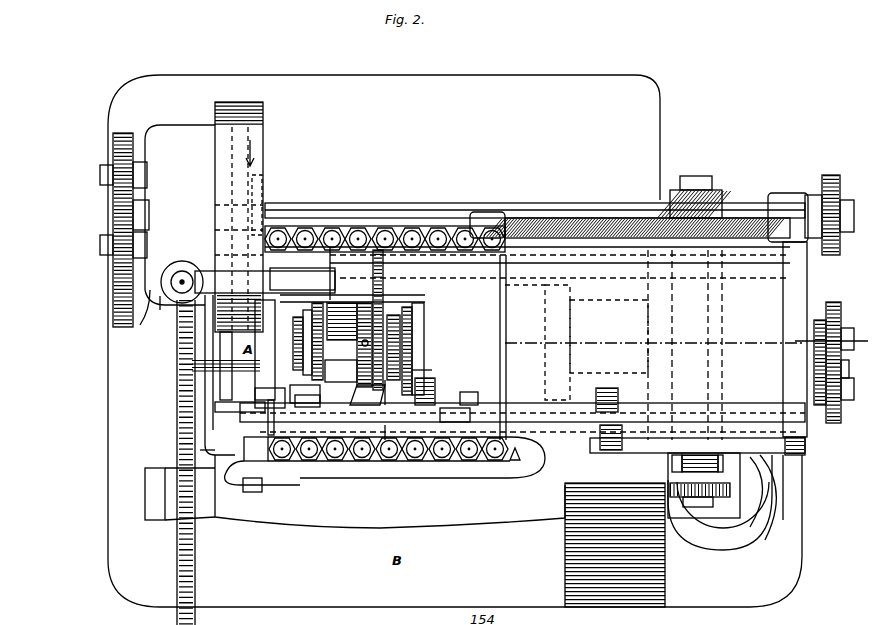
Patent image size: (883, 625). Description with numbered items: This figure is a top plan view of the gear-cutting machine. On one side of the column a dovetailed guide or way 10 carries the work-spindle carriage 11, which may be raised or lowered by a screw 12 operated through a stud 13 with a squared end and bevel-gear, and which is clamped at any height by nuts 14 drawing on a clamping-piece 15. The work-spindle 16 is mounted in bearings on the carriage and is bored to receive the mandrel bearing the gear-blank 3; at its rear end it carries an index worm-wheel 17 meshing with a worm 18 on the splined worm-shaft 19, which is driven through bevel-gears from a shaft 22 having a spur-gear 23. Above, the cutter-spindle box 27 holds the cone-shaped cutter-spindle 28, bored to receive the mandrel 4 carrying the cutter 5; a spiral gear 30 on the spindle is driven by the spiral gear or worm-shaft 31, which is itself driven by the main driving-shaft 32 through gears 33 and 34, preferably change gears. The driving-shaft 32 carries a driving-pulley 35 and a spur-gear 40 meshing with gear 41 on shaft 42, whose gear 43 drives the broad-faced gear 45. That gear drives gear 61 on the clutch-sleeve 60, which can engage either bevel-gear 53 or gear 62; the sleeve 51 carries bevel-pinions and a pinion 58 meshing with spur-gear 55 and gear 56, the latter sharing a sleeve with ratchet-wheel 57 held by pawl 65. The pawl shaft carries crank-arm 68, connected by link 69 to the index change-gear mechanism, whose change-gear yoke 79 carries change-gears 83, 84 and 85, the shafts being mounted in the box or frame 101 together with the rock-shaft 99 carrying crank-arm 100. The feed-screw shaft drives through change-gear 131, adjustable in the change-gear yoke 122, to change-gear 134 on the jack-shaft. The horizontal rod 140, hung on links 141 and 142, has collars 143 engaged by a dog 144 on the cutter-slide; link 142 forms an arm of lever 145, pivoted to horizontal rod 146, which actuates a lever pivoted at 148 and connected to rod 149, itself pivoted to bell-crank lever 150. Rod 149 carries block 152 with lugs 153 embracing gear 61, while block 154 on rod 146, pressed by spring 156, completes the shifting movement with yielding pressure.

The box or frame 101 is at (180, 207).
The change-gear 85 is at (115, 158).
The change-gear 83 is at (113, 245).
The change-gear 84 is at (118, 305).
The change-gear yoke 79 is at (140, 317).
The driving-pulley 35 is at (263, 110).
The spur-gear 40 is at (262, 178).
The worm 18 is at (178, 262).
The gear 41 is at (268, 275).
The worm-shaft 19 is at (175, 304).
The index worm-wheel 17 is at (177, 392).
The gear 43 is at (360, 222).
The shaft 42 is at (322, 232).
The main driving-shaft 32 is at (490, 212).
The spiral gear or worm-shaft 31 is at (585, 218).
The spiral gear 30 is at (718, 192).
The cutter-spindle 28 is at (705, 350).
The gear 33 is at (838, 180).
The gear 34 is at (838, 240).
The change-gear 134 is at (831, 349).
The change-gear yoke 122 is at (814, 362).
The change-gear 131 is at (840, 412).
The mandrel 4 is at (872, 341).
The link 141 is at (811, 448).
The shaft 22 is at (527, 343).
The spur-gear 23 is at (384, 272).
The rock-shaft 99 is at (240, 362).
The crank-arm 68 is at (259, 394).
The crank-arm 100 is at (235, 428).
The link 69 is at (268, 420).
The bell-crank lever 150 is at (300, 405).
The gear 61 is at (293, 330).
The gear 62 is at (303, 345).
The clutch-sleeve 60 is at (327, 341).
The broad-faced gear 45 is at (342, 321).
The sleeve 51 is at (368, 345).
The bevel-gear 53 is at (341, 371).
The spur-gear 55 is at (400, 322).
The ratchet-wheel 57 is at (412, 335).
The gear 56 is at (424, 345).
The pinion 58 is at (426, 382).
The pivot 148 is at (438, 391).
The spring 156 is at (477, 397).
The block 152 is at (316, 406).
The lugs or arms 153 is at (367, 401).
The rod 149 is at (384, 400).
The horizontal rod 146 is at (525, 422).
The stud 13 is at (530, 429).
The lever 145 is at (607, 397).
The link 142 is at (608, 447).
The block 154 is at (457, 422).
The pawl 65 is at (401, 433).
The work-spindle carriage 11 is at (420, 465).
The screw 12 is at (388, 460).
The clamping-piece 15 is at (256, 449).
The dovetailed guide or way 10 is at (270, 465).
The work-spindle 16 is at (548, 508).
The nuts 14 is at (203, 494).
The gear-blank 3 is at (615, 537).
The cutter-spindle box 27 is at (704, 485).
The cutter 5 is at (701, 496).
The horizontal rod 140 is at (720, 502).
The collars 143 is at (721, 491).
The dog 144 is at (782, 497).